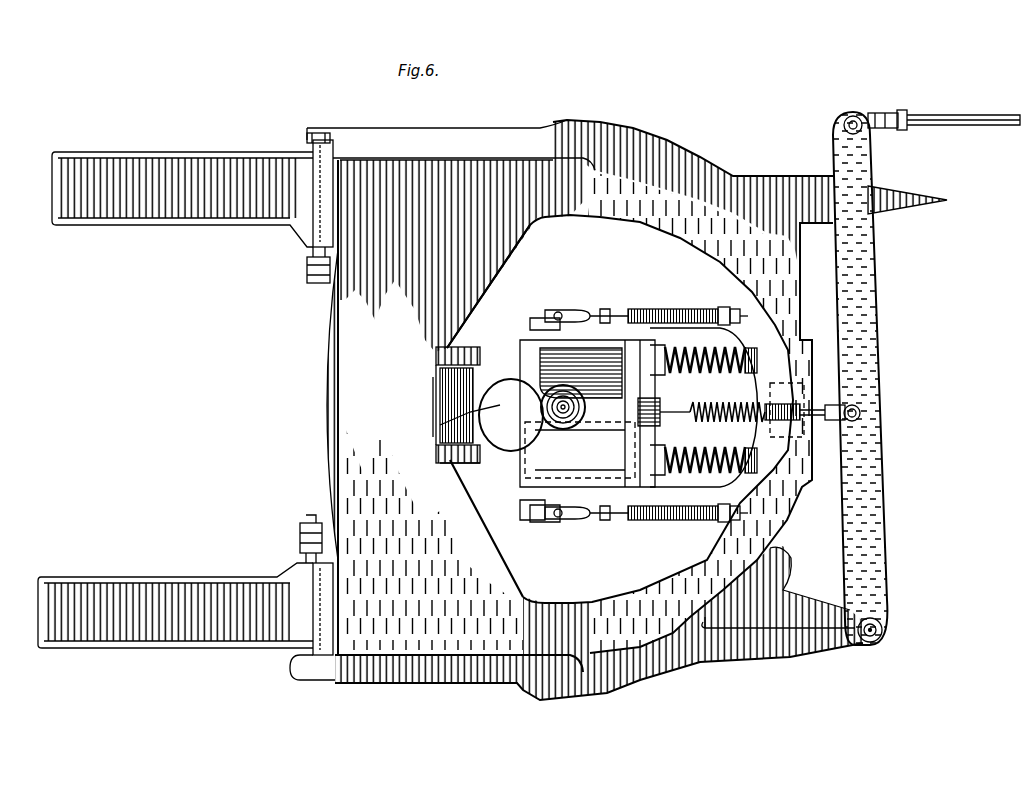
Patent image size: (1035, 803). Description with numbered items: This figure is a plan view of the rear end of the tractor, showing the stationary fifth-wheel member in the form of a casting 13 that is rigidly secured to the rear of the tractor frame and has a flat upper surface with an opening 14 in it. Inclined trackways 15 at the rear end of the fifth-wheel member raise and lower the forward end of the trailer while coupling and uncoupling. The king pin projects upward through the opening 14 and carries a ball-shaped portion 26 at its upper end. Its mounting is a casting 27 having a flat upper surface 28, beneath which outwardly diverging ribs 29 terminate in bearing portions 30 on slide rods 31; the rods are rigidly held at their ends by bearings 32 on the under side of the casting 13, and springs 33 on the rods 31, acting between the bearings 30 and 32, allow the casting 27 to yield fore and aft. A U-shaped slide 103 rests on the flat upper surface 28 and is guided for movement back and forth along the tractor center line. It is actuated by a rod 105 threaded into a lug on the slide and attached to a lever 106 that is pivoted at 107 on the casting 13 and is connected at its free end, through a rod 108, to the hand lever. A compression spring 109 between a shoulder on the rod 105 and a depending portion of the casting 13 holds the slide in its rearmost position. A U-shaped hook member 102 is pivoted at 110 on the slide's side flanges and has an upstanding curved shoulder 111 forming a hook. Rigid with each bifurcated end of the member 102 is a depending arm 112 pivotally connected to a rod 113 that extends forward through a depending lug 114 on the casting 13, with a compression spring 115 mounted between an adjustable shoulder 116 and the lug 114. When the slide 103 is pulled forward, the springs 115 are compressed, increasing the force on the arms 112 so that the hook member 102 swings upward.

The casting 13 is at (350, 333).
The opening 14 is at (610, 222).
The inclined trackways 15 is at (219, 158).
The ball-shaped portion 26 is at (540, 411).
The casting 27 is at (660, 396).
The flat upper surface 28 is at (622, 386).
The outwardly diverging ribs 29 is at (625, 438).
The bearing portions 30 is at (688, 444).
The slide rods 31 is at (738, 320).
The bearings 32 is at (775, 406).
The springs 33 is at (470, 338).
The hook member 102 is at (455, 468).
The slide 103 is at (592, 521).
The rod 105 is at (858, 410).
The lever 106 is at (886, 470).
The pivot 107 is at (878, 620).
The rod 108 is at (945, 126).
The compression spring 109 is at (705, 402).
The pivot 110 is at (520, 506).
The upstanding curved shoulder 111 is at (440, 425).
The depending arm 112 is at (550, 518).
The rod 113 is at (598, 316).
The depending lug 114 is at (735, 326).
The compression spring 115 is at (690, 309).
The adjustable shoulder 116 is at (438, 396).